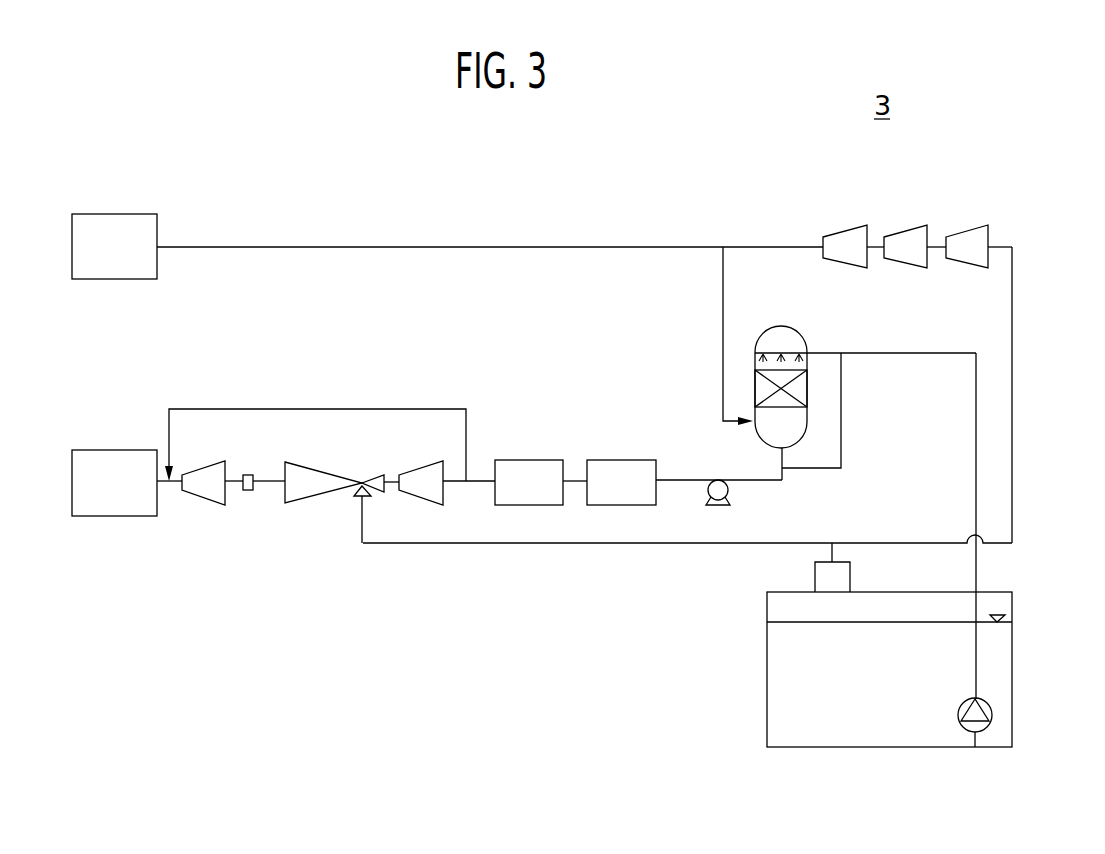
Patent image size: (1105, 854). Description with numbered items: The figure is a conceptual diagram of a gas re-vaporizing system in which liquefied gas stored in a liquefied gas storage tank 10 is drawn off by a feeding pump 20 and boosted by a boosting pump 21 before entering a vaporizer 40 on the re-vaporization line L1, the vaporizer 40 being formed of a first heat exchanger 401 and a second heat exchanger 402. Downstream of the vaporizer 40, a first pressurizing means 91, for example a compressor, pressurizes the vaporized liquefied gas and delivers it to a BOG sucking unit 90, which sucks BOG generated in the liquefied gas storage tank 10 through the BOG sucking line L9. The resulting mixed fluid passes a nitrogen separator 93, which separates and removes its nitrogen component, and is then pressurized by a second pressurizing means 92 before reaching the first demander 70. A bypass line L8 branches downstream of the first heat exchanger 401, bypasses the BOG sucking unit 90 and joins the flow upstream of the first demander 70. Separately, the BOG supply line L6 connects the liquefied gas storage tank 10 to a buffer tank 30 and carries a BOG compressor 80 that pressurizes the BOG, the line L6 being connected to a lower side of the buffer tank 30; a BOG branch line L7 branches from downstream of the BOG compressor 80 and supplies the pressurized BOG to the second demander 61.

The liquefied gas storage tank 10 is at (1012, 670).
The feeding pump 20 is at (975, 747).
The boosting pump 21 is at (729, 490).
The buffer tank 30 is at (783, 326).
The vaporizer 40 is at (575, 437).
The first heat exchanger 401 is at (520, 460).
The second heat exchanger 402 is at (621, 456).
The second demander 61 is at (116, 214).
The first demander 70 is at (116, 450).
The BOG compressor 80 is at (975, 258).
The BOG sucking unit 90 is at (320, 497).
The first pressurizing means 91 is at (413, 500).
The second pressurizing means 92 is at (203, 505).
The nitrogen separator 93 is at (246, 494).
The re-vaporization line L1 is at (977, 560).
The BOG supply line L6 is at (722, 335).
The BOG branch line L7 is at (490, 247).
The bypass line L8 is at (317, 409).
The BOG sucking line L9 is at (560, 545).